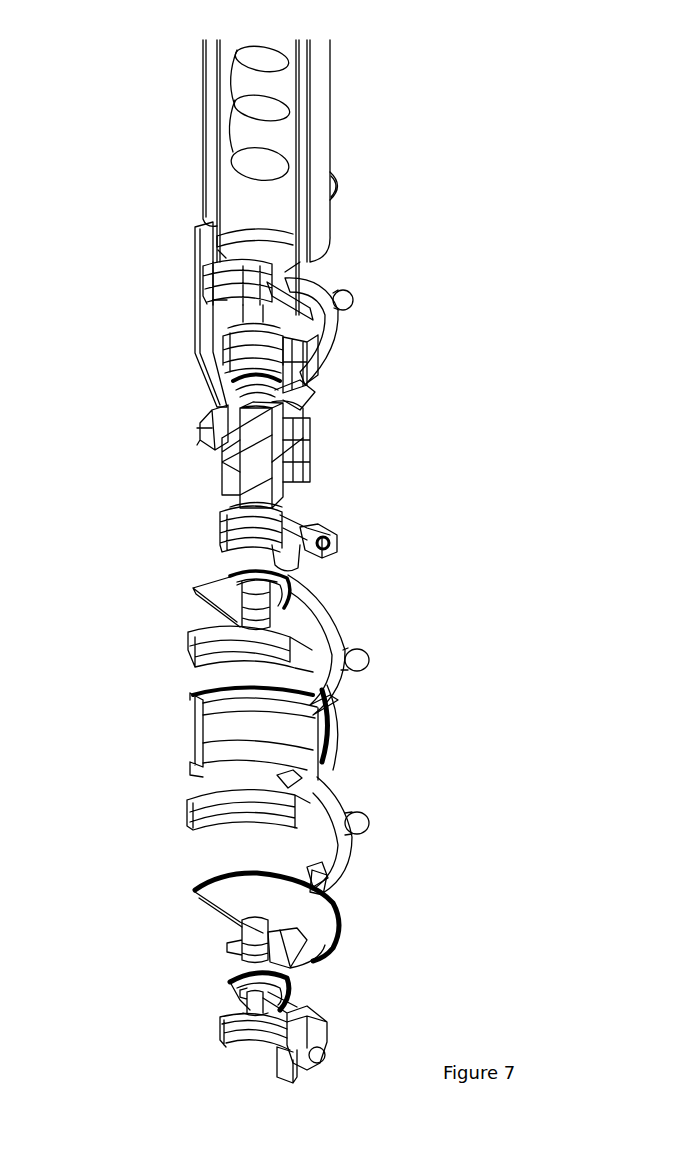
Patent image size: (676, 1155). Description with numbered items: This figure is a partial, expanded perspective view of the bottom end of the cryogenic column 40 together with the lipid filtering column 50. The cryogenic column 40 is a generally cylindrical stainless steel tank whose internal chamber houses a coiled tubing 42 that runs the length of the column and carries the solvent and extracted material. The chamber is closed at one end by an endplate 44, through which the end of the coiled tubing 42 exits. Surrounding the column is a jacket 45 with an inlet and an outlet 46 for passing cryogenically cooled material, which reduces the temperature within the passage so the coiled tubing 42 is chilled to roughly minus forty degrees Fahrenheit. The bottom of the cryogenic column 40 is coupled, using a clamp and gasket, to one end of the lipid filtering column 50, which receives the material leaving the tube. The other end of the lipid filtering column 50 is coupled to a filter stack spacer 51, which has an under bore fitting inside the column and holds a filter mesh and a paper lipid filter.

The cryogenic column 40 is at (290, 305).
The coiled tubing 42 is at (278, 73).
The endplate 44 is at (247, 256).
The jacket 45 is at (300, 143).
The outlet 46 is at (339, 190).
The lipid filtering column 50 is at (214, 827).
The filter stack spacer 51 is at (327, 771).